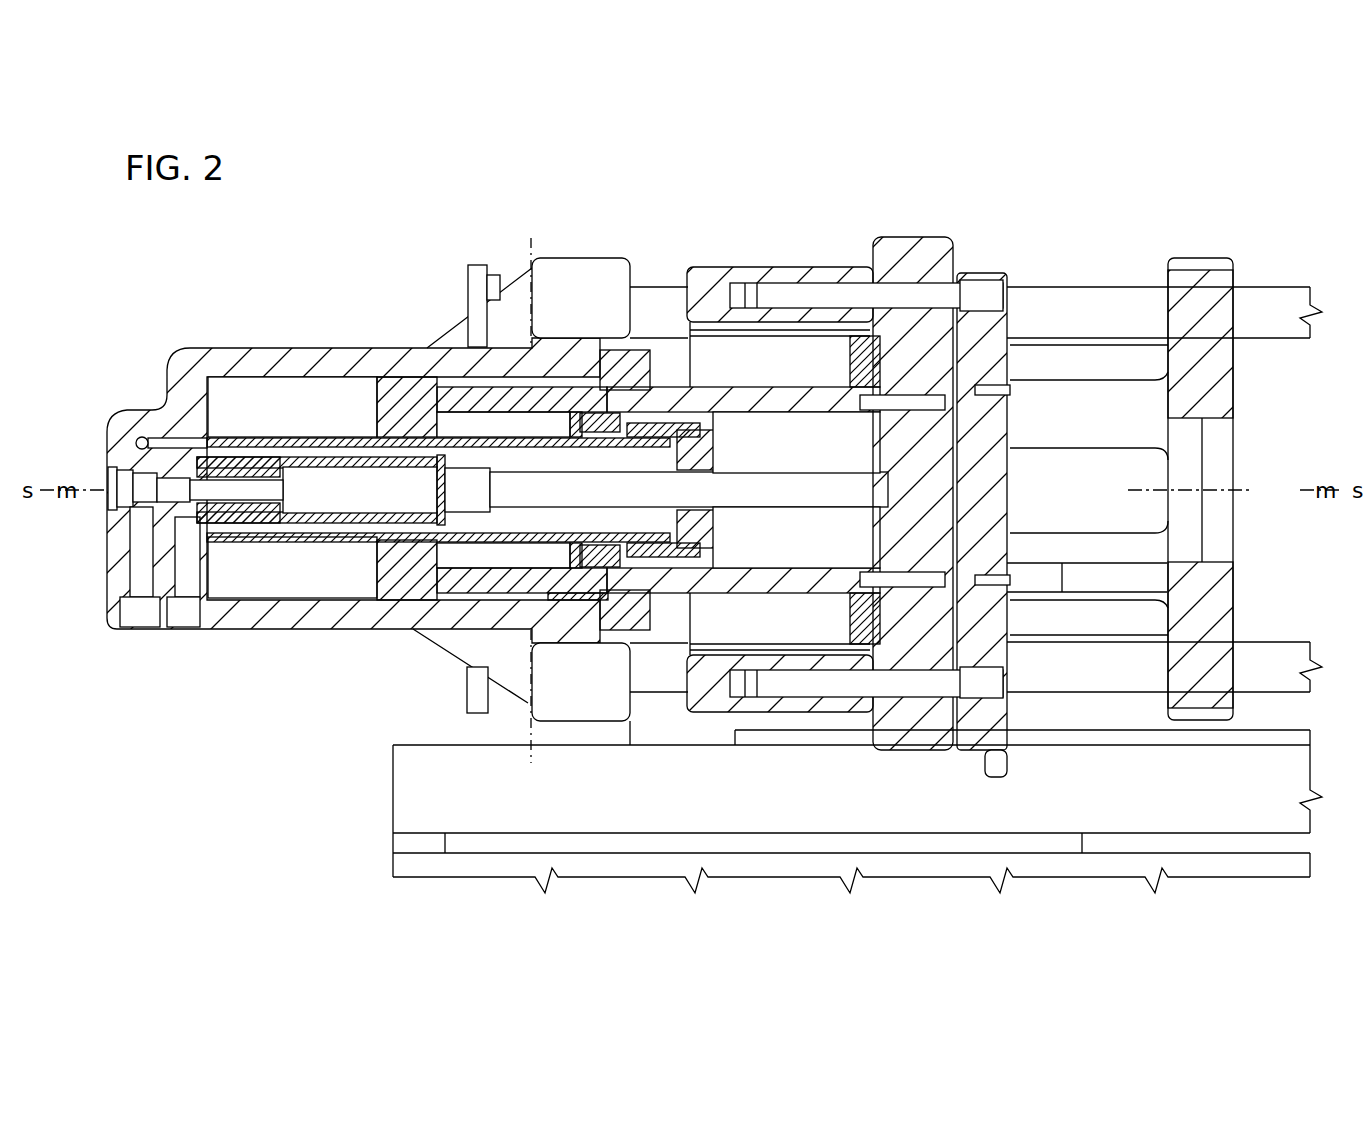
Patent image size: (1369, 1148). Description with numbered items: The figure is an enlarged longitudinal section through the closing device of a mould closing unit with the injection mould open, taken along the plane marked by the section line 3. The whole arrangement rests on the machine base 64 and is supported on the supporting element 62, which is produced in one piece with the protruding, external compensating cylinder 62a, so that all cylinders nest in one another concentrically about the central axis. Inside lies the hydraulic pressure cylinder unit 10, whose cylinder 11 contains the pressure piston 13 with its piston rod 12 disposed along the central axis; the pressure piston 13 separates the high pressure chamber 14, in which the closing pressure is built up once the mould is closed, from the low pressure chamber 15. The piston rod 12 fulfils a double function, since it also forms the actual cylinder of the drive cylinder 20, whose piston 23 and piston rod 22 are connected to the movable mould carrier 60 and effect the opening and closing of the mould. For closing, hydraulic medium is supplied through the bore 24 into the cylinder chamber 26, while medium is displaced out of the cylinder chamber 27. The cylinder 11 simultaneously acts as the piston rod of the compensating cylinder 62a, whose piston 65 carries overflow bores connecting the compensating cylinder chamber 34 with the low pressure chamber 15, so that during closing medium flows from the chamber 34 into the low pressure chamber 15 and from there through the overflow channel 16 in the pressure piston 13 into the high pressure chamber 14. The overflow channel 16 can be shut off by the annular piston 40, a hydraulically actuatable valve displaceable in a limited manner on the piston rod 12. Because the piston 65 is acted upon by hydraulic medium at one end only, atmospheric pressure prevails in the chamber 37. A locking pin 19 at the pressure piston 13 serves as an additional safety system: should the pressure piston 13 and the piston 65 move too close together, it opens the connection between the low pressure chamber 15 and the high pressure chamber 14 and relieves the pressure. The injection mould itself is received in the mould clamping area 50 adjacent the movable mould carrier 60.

The pressure cylinder unit 10 is at (704, 390).
The pressure cylinder 11 is at (775, 402).
The piston rod 12 is at (300, 437).
The pressure piston 13 is at (578, 595).
The high pressure chamber 14 is at (848, 454).
The low pressure chamber 15 is at (465, 423).
The overflow channel 16 is at (597, 540).
The locking pin 19 is at (582, 430).
The drive cylinder 20 is at (252, 495).
The piston rod 22 is at (752, 490).
The piston 23 is at (452, 486).
The bore 24 is at (195, 444).
The cylinder chamber 26 is at (385, 505).
The cylinder chamber 27 is at (507, 525).
The section line 3 is at (531, 238).
The compensating cylinder chamber 34 is at (477, 383).
The chamber 37 is at (270, 420).
The annular piston 40 is at (650, 418).
The mould clamping area 50 is at (1291, 496).
The movable mould carrier 60 is at (910, 245).
The supporting element 62 is at (575, 265).
The compensating cylinder 62a is at (218, 355).
The machine base 64 is at (803, 806).
The piston 65 is at (375, 565).